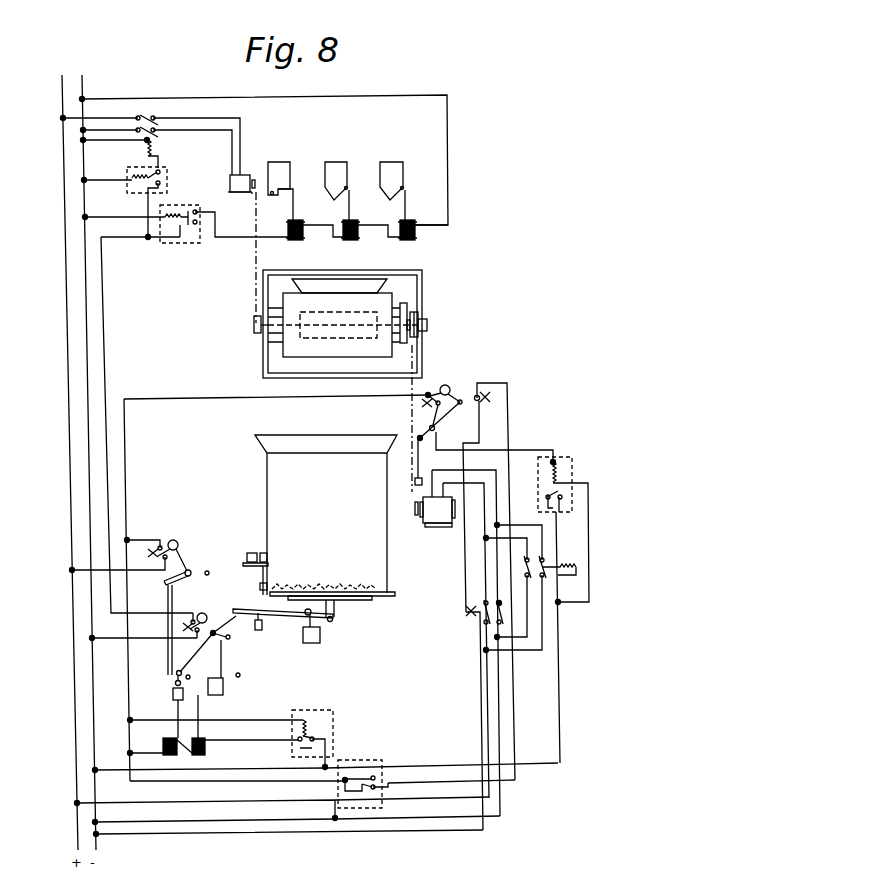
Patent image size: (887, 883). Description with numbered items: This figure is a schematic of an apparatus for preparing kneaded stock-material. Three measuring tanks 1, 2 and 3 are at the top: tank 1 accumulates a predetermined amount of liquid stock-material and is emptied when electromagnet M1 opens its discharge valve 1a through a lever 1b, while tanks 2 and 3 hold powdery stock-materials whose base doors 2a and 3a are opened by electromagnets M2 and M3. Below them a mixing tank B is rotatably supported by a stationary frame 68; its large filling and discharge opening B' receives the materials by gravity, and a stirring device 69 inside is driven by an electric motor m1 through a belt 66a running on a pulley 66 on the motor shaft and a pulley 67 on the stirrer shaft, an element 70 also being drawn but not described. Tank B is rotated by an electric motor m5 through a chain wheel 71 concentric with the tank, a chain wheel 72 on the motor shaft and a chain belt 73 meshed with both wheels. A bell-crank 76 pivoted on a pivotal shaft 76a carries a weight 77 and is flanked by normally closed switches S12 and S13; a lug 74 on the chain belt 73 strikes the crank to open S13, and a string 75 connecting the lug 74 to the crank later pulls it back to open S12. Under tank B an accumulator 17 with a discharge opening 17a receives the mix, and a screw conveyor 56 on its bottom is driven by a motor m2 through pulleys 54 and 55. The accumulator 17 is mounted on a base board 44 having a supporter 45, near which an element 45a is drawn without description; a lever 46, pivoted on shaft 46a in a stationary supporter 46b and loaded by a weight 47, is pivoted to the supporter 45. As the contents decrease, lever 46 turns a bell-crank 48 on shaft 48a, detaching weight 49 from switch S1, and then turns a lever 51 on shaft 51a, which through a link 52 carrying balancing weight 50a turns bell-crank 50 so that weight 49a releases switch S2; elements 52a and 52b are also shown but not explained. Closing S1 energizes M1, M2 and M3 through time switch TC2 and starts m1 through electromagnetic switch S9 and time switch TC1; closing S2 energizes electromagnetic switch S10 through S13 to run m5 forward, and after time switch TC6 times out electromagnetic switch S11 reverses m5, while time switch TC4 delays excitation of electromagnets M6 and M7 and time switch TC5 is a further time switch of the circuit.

The stock-material measuring tank 1 is at (280, 182).
The discharge valve 1a is at (272, 197).
The lever 1b is at (289, 185).
The stock-material measuring tank 2 is at (337, 181).
The base door 2a is at (345, 192).
The stock-material measuring tank 3 is at (392, 181).
The base door 3a is at (405, 193).
The electric motor m1 is at (245, 172).
The electromagnet M1 is at (297, 242).
The electromagnet M2 is at (354, 242).
The electromagnet M3 is at (414, 242).
The electromagnetic switch S9 is at (155, 116).
The time switch TC1 is at (167, 173).
The time switch TC2 is at (166, 248).
The pulley 66 is at (252, 194).
The belt 66a is at (255, 262).
The pulley 67 is at (253, 330).
The stationary frame 68 is at (263, 357).
The filling and discharge opening B' is at (343, 283).
The mixing tank B is at (342, 333).
The stirring device 69 is at (360, 323).
The pulley 70 is at (408, 308).
The chain wheel 71 is at (419, 320).
The switch S12 is at (442, 384).
The weight 77 is at (450, 387).
The switch S13 is at (478, 384).
The chain belt 73 is at (412, 413).
The bell-crank 76 is at (456, 406).
The pivotal shaft 76a is at (436, 431).
The string 75 is at (416, 466).
The lug 74 is at (415, 485).
The chain wheel 72 is at (416, 513).
The electric motor m5 is at (438, 512).
The time switch TC6 is at (560, 456).
The electromagnetic switch S11 is at (548, 563).
The electromagnetic switch S10 is at (481, 620).
The accumulator 17 is at (267, 484).
The discharge opening 17a is at (397, 592).
The screw conveyor 56 is at (306, 587).
The electric motor m2 is at (251, 552).
The pulley 54 is at (268, 556).
The pulley 55 is at (261, 591).
The base board 44 is at (365, 602).
The supporter 45 is at (336, 618).
The pivot 45a is at (331, 622).
The pivotal shaft 46a is at (300, 610).
The weight 47 is at (262, 625).
The lever 46 is at (297, 619).
The stationary supporter 46b is at (312, 644).
The switch S2 is at (160, 545).
The weight 49a is at (179, 546).
The balancing weight 50a is at (192, 570).
The bell-crank 50 is at (164, 582).
The link 52 is at (168, 657).
The switch S1 is at (190, 615).
The weight 49 is at (207, 613).
The bell-crank 48 is at (215, 630).
The shaft 48a is at (236, 631).
The lever 51 is at (224, 651).
The shaft 51a is at (248, 667).
The armature 52a is at (172, 693).
The armature 52b is at (219, 696).
The electromagnet M6 is at (163, 746).
The electromagnet M7 is at (201, 740).
The time switch TC4 is at (333, 714).
The time switch TC5 is at (382, 761).